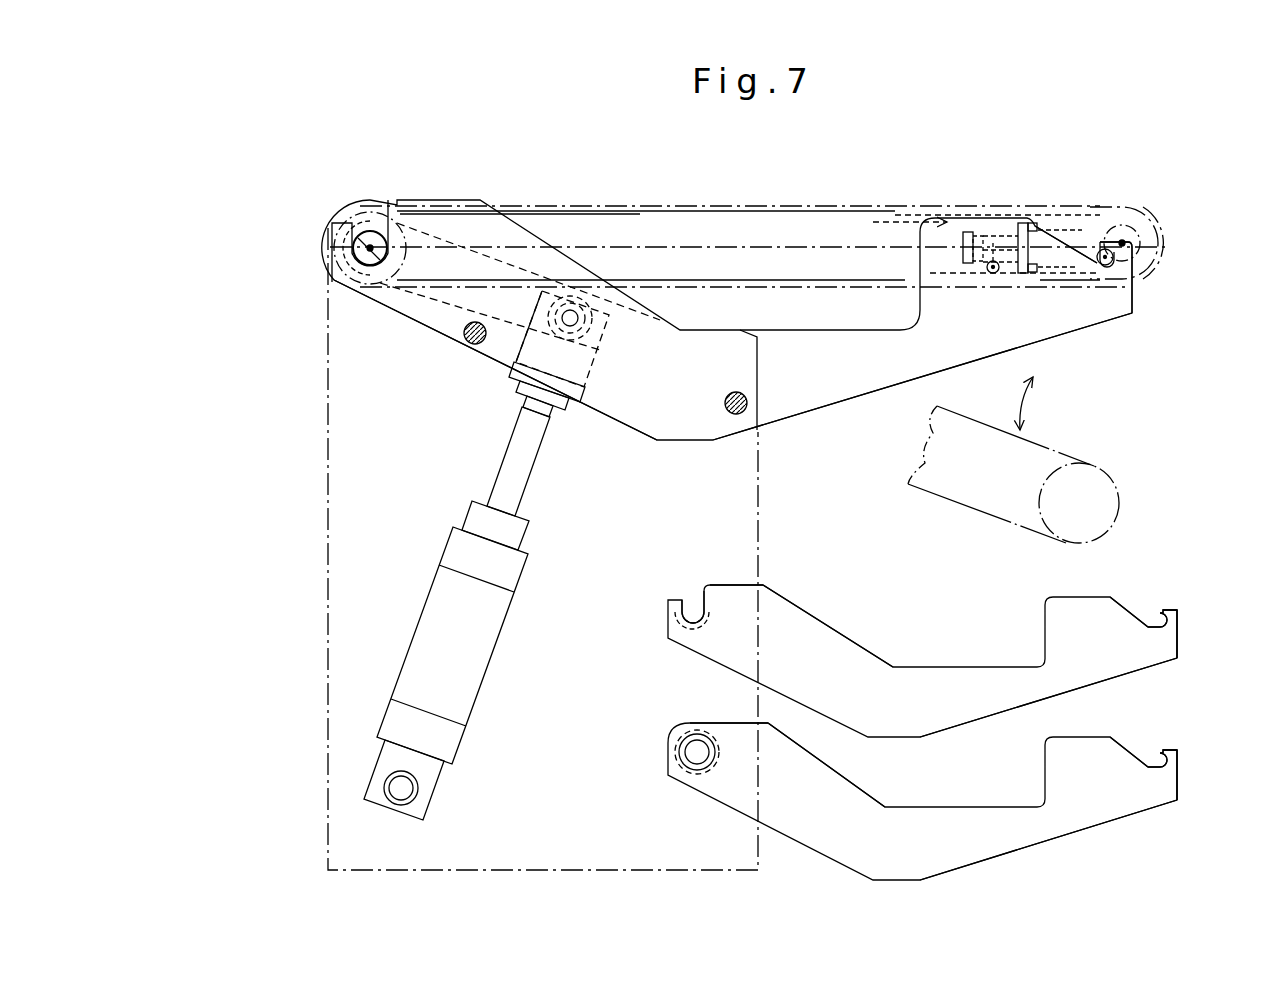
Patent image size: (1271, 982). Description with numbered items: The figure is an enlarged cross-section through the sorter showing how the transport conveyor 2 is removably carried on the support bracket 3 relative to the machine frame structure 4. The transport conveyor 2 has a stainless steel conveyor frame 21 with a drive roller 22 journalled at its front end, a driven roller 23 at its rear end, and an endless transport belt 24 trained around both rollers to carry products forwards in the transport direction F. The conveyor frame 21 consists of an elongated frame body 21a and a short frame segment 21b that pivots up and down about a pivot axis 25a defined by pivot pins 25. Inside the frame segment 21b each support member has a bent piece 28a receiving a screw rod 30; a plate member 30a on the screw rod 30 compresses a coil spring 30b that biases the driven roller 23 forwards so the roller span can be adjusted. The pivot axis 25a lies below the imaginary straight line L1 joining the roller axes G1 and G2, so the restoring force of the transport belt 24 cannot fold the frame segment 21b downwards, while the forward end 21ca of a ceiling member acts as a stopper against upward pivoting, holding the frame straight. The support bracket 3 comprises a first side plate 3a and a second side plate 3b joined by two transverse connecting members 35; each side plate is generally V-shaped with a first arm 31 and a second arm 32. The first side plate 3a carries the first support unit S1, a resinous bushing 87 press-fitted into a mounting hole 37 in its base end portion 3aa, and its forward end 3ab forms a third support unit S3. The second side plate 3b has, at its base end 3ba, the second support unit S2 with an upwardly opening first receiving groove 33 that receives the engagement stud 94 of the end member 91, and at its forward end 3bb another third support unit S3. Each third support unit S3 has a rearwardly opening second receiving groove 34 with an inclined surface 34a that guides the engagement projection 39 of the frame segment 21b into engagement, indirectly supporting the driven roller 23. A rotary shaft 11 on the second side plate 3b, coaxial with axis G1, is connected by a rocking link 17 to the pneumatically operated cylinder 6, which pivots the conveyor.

The transport conveyor 2 is at (753, 205).
The support bracket 3 is at (866, 402).
The first side plate 3a is at (1081, 845).
The base end portion of first side plate 3aa is at (722, 733).
The forward end of second arm of first side plate 3ab is at (1150, 800).
The second side plate 3b is at (803, 590).
The base end of second side plate 3ba is at (717, 588).
The forward end of second arm of second side plate 3bb is at (1178, 641).
The machine frame structure 4 is at (326, 590).
The pneumatically operated cylinder 6 is at (430, 590).
The rotary shaft 11 is at (682, 633).
The rocking link 17 is at (450, 305).
The conveyor frame 21 is at (1045, 118).
The frame body 21a is at (930, 215).
The frame segment 21b is at (1050, 228).
The forward end of ceiling member 21ca is at (985, 258).
The drive roller 22 is at (345, 250).
The driven roller 23 is at (1143, 230).
The transport belt 24 is at (640, 208).
The pivot pins 25 is at (992, 274).
The pivot axis 25a is at (1000, 275).
The bent piece 28a is at (967, 230).
The screw rod 30 is at (1068, 228).
The plate member 30a is at (1000, 235).
The coil spring 30b is at (1045, 215).
The first arm 31 is at (613, 403).
The second arm 32 is at (1050, 342).
The first receiving groove 33 is at (340, 262).
The second receiving groove 34 is at (1112, 262).
The inclined surface 34a is at (1084, 262).
The transverse connecting members 35 is at (472, 345).
The mounting hole 37 is at (705, 768).
The engagement projection 39 is at (1105, 268).
The bushing 87 is at (680, 772).
The end member 91 is at (372, 218).
The engagement stud 94 is at (368, 262).
The axis of rotation of drive roller G1 is at (370, 248).
The axis of rotation of driven roller G2 is at (1122, 243).
The first support unit S1 is at (676, 735).
The second support unit S2 is at (676, 596).
The third support unit S3 is at (1171, 606).
The imaginary straight line L1 is at (893, 240).
The transport direction F is at (843, 190).